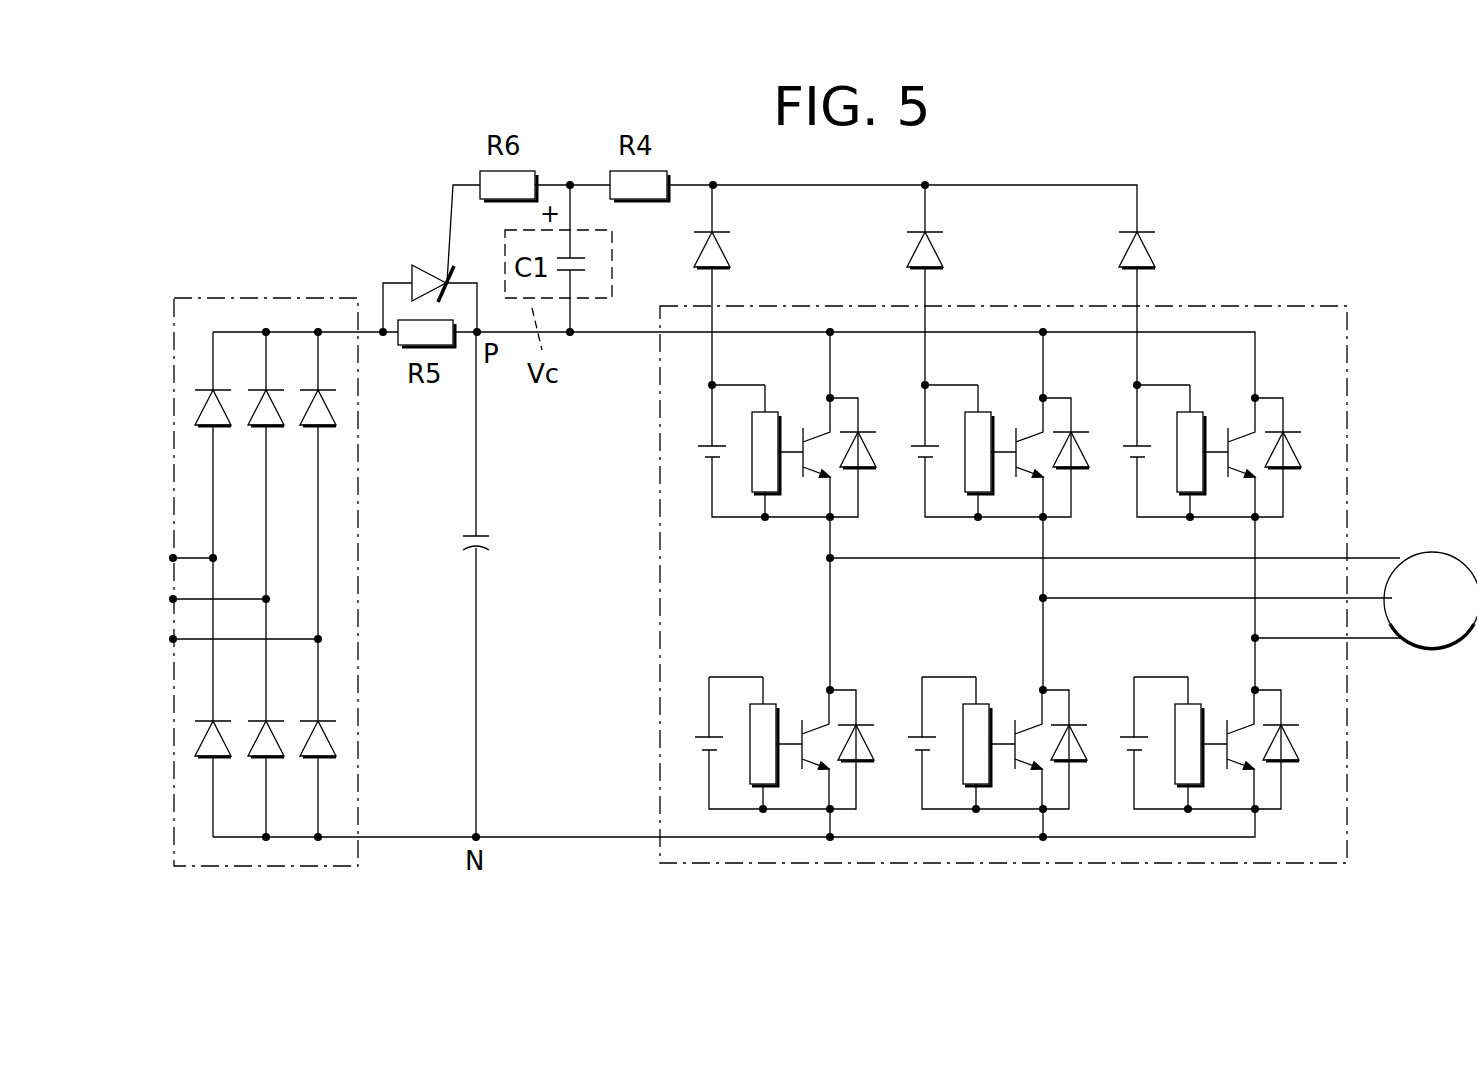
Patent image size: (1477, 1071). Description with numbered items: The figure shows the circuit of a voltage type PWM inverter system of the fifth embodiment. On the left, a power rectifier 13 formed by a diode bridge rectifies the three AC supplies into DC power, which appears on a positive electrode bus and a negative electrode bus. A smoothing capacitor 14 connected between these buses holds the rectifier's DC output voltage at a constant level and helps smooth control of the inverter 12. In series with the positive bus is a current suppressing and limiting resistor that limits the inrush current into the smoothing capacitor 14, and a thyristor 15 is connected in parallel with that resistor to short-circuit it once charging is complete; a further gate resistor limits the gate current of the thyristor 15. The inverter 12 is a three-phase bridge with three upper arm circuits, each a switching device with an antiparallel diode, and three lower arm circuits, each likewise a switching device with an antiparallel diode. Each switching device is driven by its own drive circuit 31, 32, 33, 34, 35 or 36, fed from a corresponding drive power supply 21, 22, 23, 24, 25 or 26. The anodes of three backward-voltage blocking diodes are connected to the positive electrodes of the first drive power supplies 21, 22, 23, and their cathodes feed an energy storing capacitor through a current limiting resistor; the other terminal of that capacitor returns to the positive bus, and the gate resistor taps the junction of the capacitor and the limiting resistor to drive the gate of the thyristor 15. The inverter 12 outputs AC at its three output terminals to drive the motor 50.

The inverter 12 is at (1259, 302).
The power rectifier 13 is at (293, 293).
The smoothing capacitor 14 is at (463, 551).
The thyristor 15 is at (427, 265).
The drive power supply 21 is at (698, 450).
The drive power supply 22 is at (902, 440).
The drive power supply 23 is at (1129, 440).
The drive power supply 24 is at (700, 733).
The drive power supply 25 is at (913, 733).
The drive power supply 26 is at (1128, 733).
The drive circuit 31 is at (768, 408).
The drive circuit 32 is at (983, 408).
The drive circuit 33 is at (1195, 408).
The drive circuit 34 is at (768, 700).
The drive circuit 35 is at (981, 700).
The drive circuit 36 is at (1193, 700).
The motor 50 is at (1453, 553).